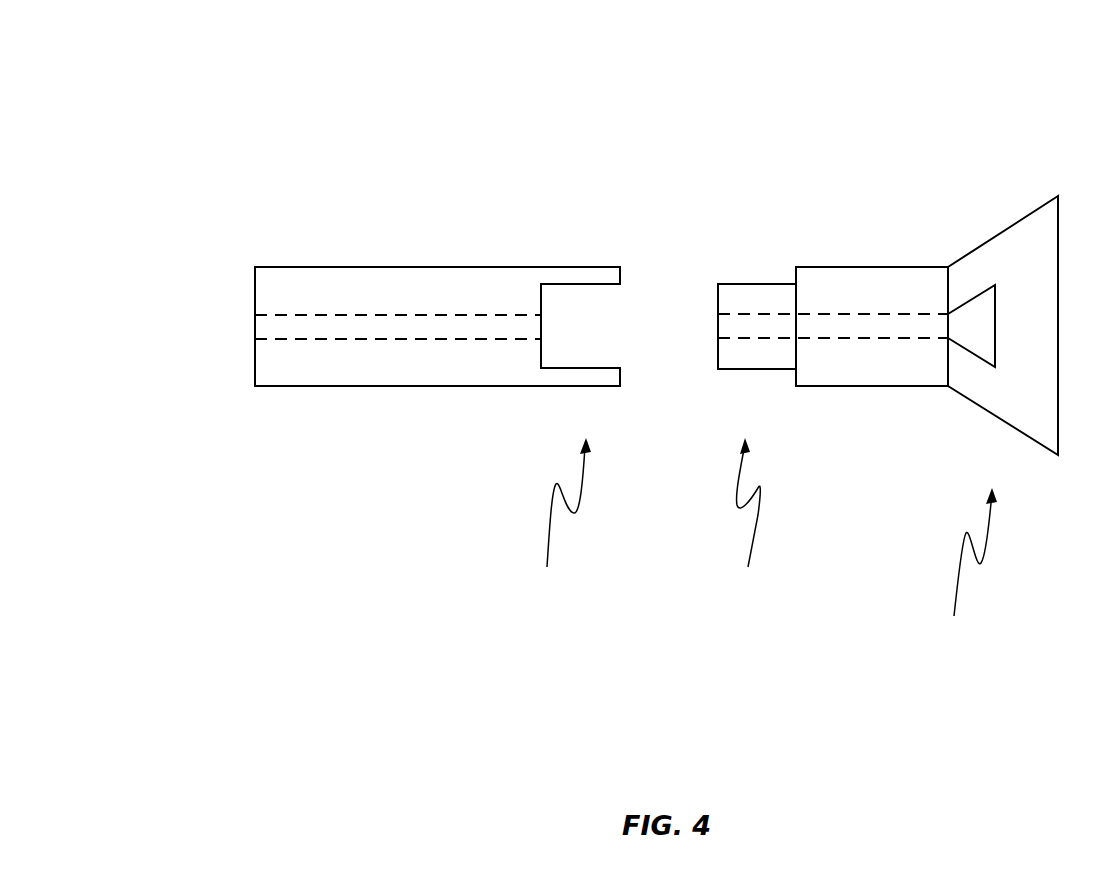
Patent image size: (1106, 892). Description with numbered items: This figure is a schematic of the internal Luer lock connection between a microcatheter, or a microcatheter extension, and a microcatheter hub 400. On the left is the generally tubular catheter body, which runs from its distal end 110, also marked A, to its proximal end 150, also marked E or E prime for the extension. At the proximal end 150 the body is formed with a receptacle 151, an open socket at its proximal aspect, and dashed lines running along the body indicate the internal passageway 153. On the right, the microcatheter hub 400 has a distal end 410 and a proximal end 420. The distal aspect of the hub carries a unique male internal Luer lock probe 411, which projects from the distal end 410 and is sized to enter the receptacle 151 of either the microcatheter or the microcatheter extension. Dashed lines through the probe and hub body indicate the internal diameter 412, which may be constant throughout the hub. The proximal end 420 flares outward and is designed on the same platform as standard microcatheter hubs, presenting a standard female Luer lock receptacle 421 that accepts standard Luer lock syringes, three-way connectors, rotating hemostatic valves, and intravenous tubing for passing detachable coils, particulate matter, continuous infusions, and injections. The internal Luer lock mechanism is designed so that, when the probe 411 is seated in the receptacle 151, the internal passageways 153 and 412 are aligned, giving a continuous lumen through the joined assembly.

The distal end 110 is at (437, 271).
The proximal end 150 is at (566, 262).
The proximal aspect receptacle 151 is at (550, 527).
The internal passageway 153 is at (367, 327).
The microcatheter hub 400 is at (861, 374).
The distal end of microcatheter hub 410 is at (839, 271).
The probe 411 is at (750, 527).
The internal diameter 412 is at (804, 326).
The proximal end of microcatheter hub 420 is at (966, 432).
The standard Luer lock receptacle 421 is at (975, 367).